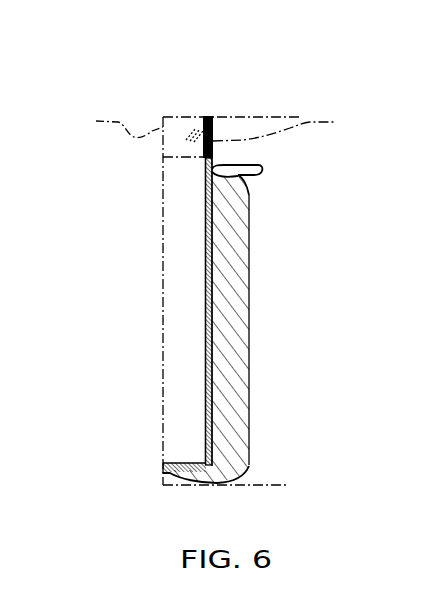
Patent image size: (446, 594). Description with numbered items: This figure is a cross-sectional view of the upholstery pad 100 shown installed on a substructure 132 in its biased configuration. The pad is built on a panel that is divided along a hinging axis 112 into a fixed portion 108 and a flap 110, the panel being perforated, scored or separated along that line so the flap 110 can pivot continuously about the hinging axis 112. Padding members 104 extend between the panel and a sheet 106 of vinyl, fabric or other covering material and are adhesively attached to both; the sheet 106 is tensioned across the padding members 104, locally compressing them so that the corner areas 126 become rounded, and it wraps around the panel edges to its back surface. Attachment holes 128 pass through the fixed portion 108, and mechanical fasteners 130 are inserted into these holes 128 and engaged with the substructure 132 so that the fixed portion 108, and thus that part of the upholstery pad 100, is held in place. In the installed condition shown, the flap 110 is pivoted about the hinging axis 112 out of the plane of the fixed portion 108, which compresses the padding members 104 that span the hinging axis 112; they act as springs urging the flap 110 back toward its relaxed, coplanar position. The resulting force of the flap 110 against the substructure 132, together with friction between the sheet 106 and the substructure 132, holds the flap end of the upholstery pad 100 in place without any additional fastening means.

The upholstery pad 100 is at (98, 86).
The padding members 104 is at (234, 256).
The sheet 106 is at (250, 315).
The fixed portion 108 is at (206, 262).
The flap 110 is at (197, 462).
The hinging axis 112 is at (250, 470).
The corner areas 126 is at (258, 166).
The attachment holes 128 is at (214, 131).
The mechanical fasteners 130 is at (299, 127).
The substructure 132 is at (128, 127).